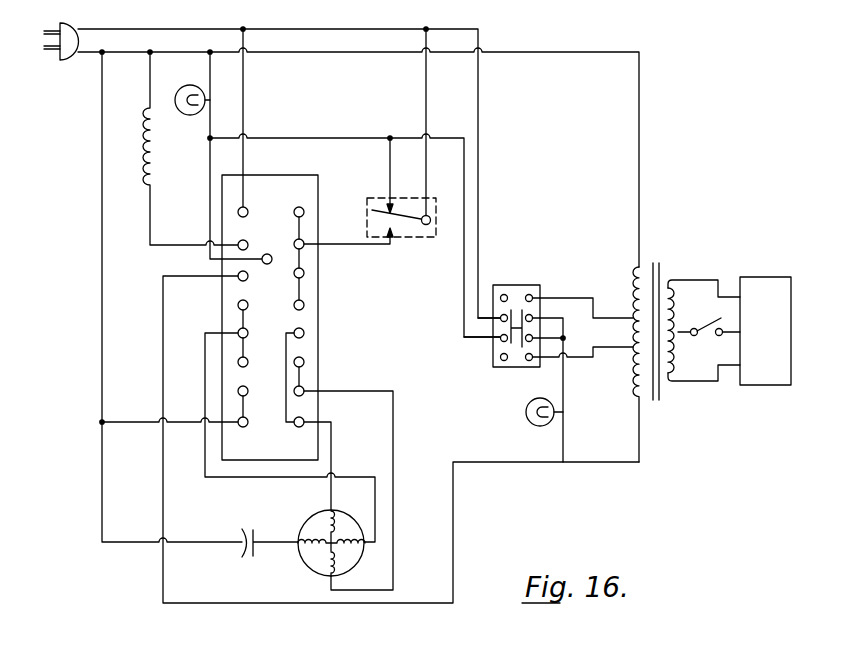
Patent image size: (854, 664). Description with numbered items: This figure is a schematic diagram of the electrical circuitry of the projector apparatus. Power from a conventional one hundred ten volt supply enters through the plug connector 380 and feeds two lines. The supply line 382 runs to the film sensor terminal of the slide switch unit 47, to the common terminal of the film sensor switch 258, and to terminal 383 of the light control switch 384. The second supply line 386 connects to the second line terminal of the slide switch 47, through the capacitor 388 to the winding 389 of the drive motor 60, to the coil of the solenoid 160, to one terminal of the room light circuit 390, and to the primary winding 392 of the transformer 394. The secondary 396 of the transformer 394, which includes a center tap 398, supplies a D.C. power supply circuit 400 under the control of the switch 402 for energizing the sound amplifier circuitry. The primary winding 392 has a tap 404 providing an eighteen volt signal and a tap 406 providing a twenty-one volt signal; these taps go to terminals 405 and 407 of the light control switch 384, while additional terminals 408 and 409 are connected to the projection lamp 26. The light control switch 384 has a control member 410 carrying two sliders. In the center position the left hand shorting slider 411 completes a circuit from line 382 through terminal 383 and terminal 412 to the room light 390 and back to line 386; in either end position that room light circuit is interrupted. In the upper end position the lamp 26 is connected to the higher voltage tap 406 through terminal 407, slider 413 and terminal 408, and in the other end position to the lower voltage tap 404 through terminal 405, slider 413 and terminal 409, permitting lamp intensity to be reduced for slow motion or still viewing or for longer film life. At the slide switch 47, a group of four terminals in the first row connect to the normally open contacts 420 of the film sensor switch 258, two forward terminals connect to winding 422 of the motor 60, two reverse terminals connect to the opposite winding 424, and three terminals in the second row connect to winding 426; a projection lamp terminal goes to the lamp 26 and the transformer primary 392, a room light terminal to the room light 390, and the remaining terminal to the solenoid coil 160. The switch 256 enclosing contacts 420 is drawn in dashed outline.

The projection lamp 26 is at (527, 419).
The slide switch unit 47 is at (320, 323).
The drive motor 60 is at (336, 562).
The solenoid 160 is at (147, 158).
The switch 256 is at (372, 200).
The film sensor switch 258 is at (426, 241).
The plug connector 380 is at (58, 60).
The supply line 382 is at (197, 29).
The terminal 383 is at (499, 296).
The light control switch 384 is at (523, 314).
The second supply line 386 is at (92, 54).
The capacitor 388 is at (240, 555).
The winding 389 is at (310, 537).
The room light circuit 390 is at (191, 114).
The primary winding 392 is at (645, 258).
The transformer 394 is at (655, 402).
The secondary 396 is at (672, 282).
The center tap 398 is at (686, 329).
The D.C. power supply circuit 400 is at (776, 268).
The switch 402 is at (707, 337).
The tap 404 is at (637, 343).
The terminal 405 is at (528, 363).
The tap 406 is at (632, 321).
The terminal 407 is at (533, 294).
The terminal 408 is at (534, 313).
The terminal 409 is at (567, 340).
The control member 410 is at (508, 362).
The shorting slider 411 is at (497, 323).
The terminal 412 is at (497, 341).
The slider 413 is at (524, 331).
The normally open contacts 420 is at (389, 241).
The winding 422 is at (336, 527).
The winding 424 is at (323, 565).
The winding 426 is at (378, 565).